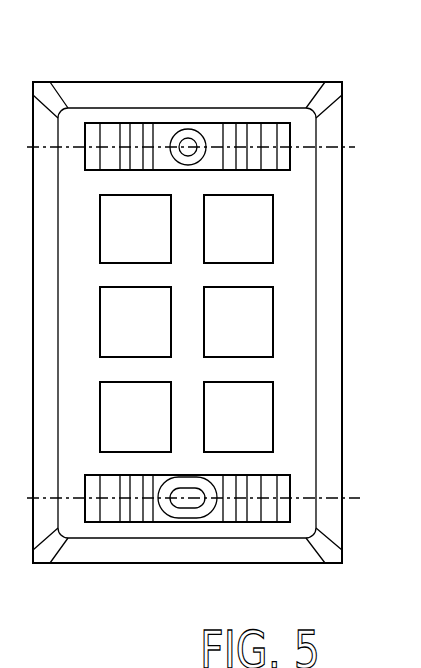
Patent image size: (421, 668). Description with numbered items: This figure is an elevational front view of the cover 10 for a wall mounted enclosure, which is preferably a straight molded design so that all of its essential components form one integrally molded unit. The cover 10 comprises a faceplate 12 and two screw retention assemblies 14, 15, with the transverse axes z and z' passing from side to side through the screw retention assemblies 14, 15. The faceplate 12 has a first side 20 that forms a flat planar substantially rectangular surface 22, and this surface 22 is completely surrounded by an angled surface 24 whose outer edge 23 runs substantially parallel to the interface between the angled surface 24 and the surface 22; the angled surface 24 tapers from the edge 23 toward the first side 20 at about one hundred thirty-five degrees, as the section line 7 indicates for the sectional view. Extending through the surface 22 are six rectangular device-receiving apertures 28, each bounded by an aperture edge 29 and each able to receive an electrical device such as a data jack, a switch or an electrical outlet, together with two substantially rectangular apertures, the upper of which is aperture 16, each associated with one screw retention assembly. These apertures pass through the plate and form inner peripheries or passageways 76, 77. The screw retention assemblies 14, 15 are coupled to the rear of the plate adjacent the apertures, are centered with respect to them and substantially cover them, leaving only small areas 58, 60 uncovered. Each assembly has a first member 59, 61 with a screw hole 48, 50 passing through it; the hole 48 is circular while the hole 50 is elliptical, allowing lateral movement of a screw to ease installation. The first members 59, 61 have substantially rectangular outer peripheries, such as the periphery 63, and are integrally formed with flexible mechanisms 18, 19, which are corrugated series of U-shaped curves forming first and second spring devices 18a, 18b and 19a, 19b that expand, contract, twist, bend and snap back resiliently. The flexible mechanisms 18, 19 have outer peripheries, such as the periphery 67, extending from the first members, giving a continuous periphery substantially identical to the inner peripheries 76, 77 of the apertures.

The section line 7 is at (187, 42).
The cover 10 is at (250, 50).
The faceplate 12 is at (350, 305).
The screw retention assembly 14 is at (211, 164).
The screw retention assembly 15 is at (225, 471).
The aperture 16 is at (297, 135).
The flexible mechanism 18 is at (272, 126).
The first spring device 18a is at (108, 165).
The second spring device 18b is at (250, 132).
The flexible mechanism 19 is at (282, 531).
The first spring device 19a is at (125, 483).
The second spring device 19b is at (253, 531).
The first side 20 is at (297, 365).
The rectangular surface 22 is at (298, 383).
The edge 23 is at (343, 418).
The angled surface 24 is at (327, 271).
The device-receiving aperture 28 is at (249, 218).
The aperture edge 29 is at (272, 232).
The screw hole 48 is at (189, 139).
The screw hole 50 is at (200, 494).
The small area 58 is at (285, 484).
The first member 59 is at (160, 132).
The small area 60 is at (88, 485).
The first member 61 is at (163, 520).
The outer periphery 63 is at (140, 168).
The outer periphery 67 is at (146, 475).
The inner periphery 76 is at (89, 120).
The inner periphery 77 is at (88, 515).